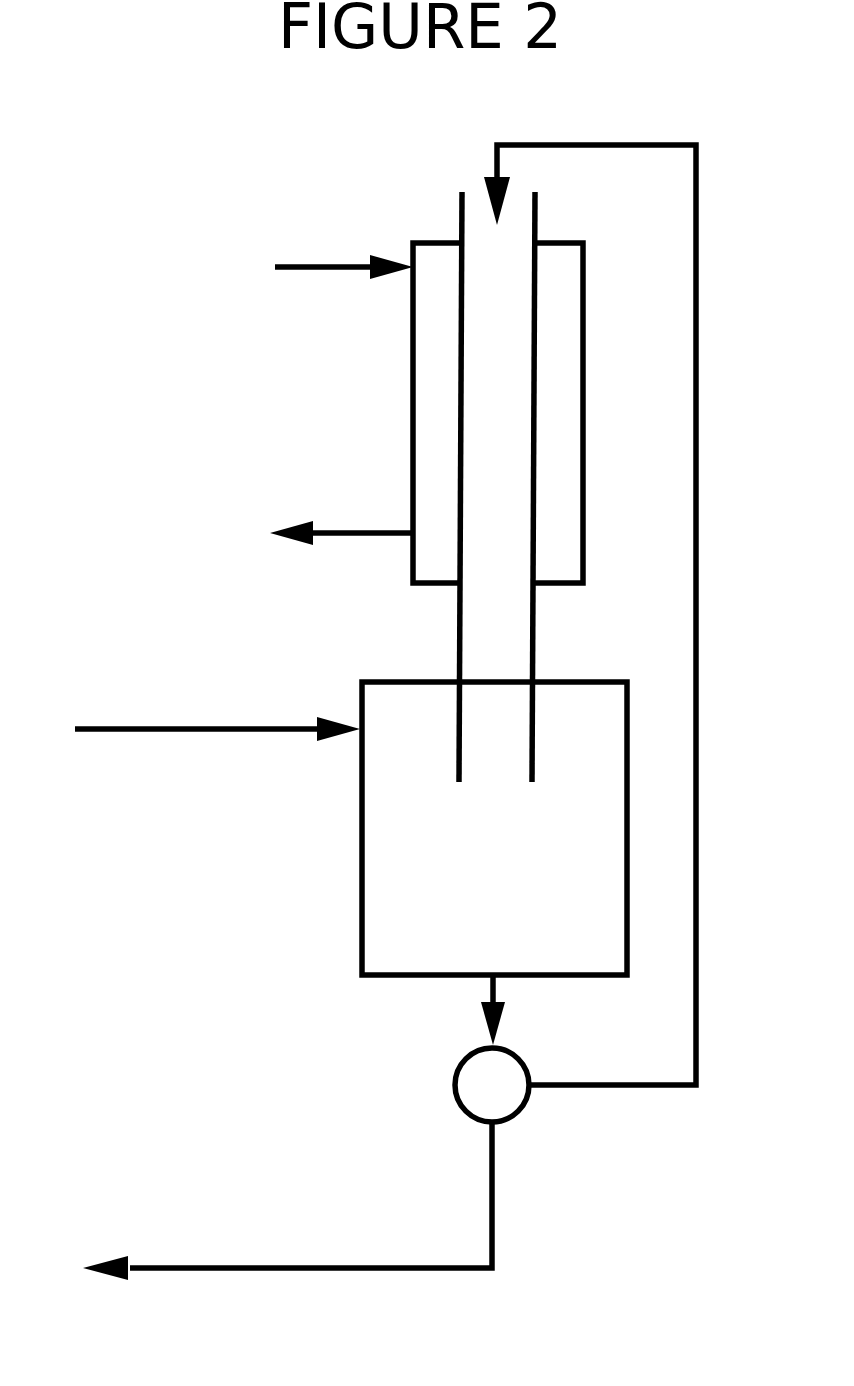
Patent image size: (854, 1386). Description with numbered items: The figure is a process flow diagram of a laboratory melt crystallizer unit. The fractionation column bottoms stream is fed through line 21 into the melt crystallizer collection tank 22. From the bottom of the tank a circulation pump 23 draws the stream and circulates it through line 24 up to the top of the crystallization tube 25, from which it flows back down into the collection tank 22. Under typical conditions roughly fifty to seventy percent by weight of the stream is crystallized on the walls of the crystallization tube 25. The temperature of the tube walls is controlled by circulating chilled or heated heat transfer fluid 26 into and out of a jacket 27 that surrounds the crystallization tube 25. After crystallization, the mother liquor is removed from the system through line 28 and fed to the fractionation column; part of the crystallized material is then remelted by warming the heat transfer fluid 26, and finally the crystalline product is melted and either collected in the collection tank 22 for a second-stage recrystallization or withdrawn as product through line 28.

The line 21 is at (217, 704).
The melt crystallizer collection tank 22 is at (494, 828).
The circulation pump 23 is at (492, 1048).
The line 24 is at (623, 615).
The crystallization tube 25 is at (497, 487).
The heat transfer fluid 26 is at (313, 399).
The jacket 27 is at (403, 402).
The line 28 is at (287, 1201).